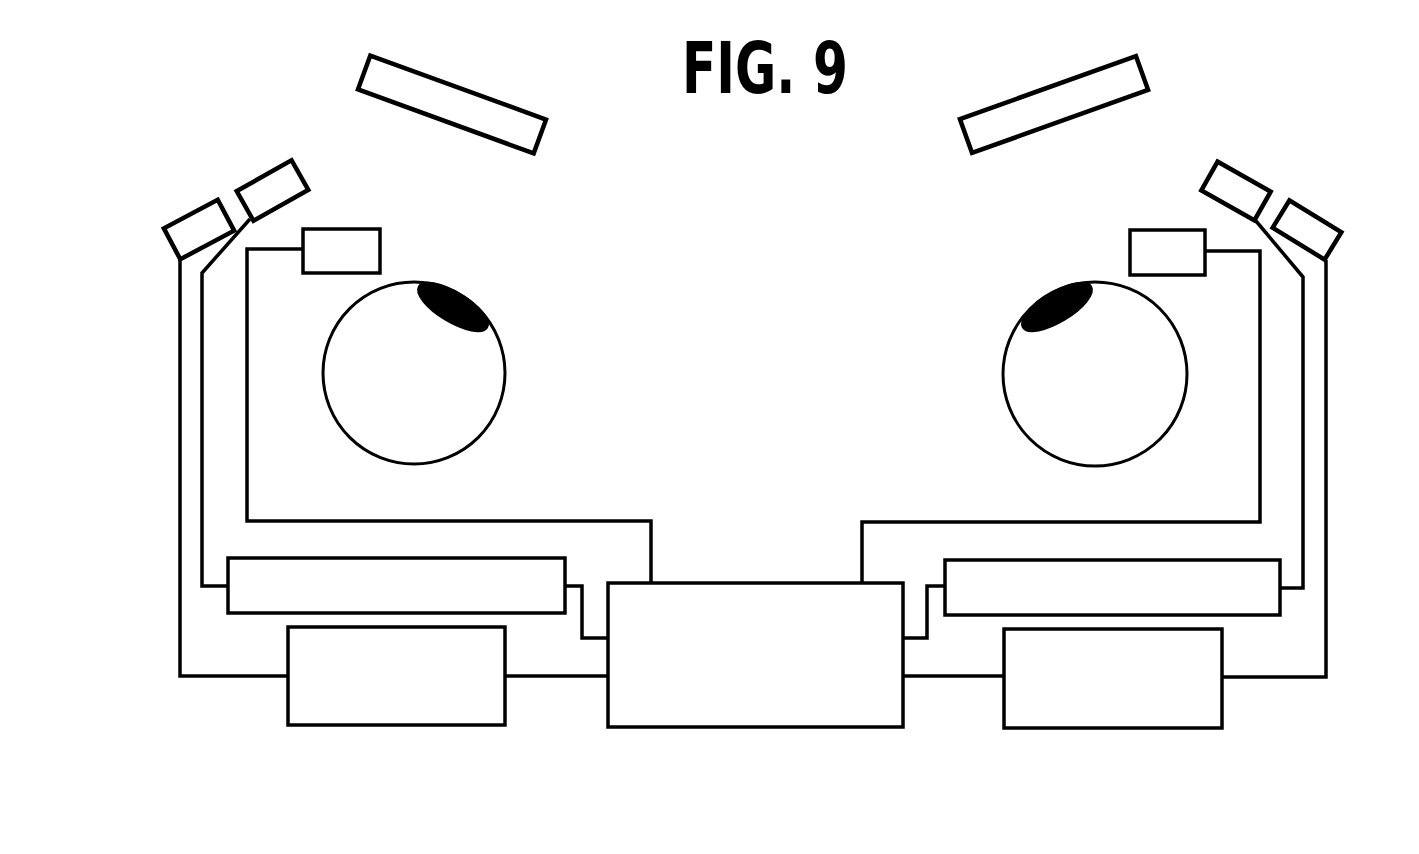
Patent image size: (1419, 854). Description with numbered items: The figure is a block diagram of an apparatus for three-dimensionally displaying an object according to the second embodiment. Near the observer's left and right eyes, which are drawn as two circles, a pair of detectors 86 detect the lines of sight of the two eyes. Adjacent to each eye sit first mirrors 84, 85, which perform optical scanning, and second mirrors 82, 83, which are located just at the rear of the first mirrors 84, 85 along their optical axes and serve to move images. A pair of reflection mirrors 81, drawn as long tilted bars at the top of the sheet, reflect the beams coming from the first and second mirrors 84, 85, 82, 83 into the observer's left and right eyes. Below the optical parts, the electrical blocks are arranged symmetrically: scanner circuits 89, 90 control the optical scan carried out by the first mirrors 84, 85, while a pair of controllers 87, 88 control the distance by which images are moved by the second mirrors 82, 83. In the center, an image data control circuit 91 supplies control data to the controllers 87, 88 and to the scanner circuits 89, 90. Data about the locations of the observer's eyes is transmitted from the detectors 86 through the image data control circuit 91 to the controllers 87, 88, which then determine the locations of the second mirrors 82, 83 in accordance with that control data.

The reflection mirror 81 is at (482, 92).
The second mirror 82 is at (260, 173).
The second mirror 83 is at (1247, 173).
The first mirror 84 is at (162, 230).
The first mirror 85 is at (1343, 233).
The detector 86 is at (382, 243).
The controller 87 is at (567, 563).
The controller 88 is at (943, 563).
The scanner circuit 89 is at (382, 728).
The scanner circuit 90 is at (1127, 730).
The image data control circuit 91 is at (740, 728).